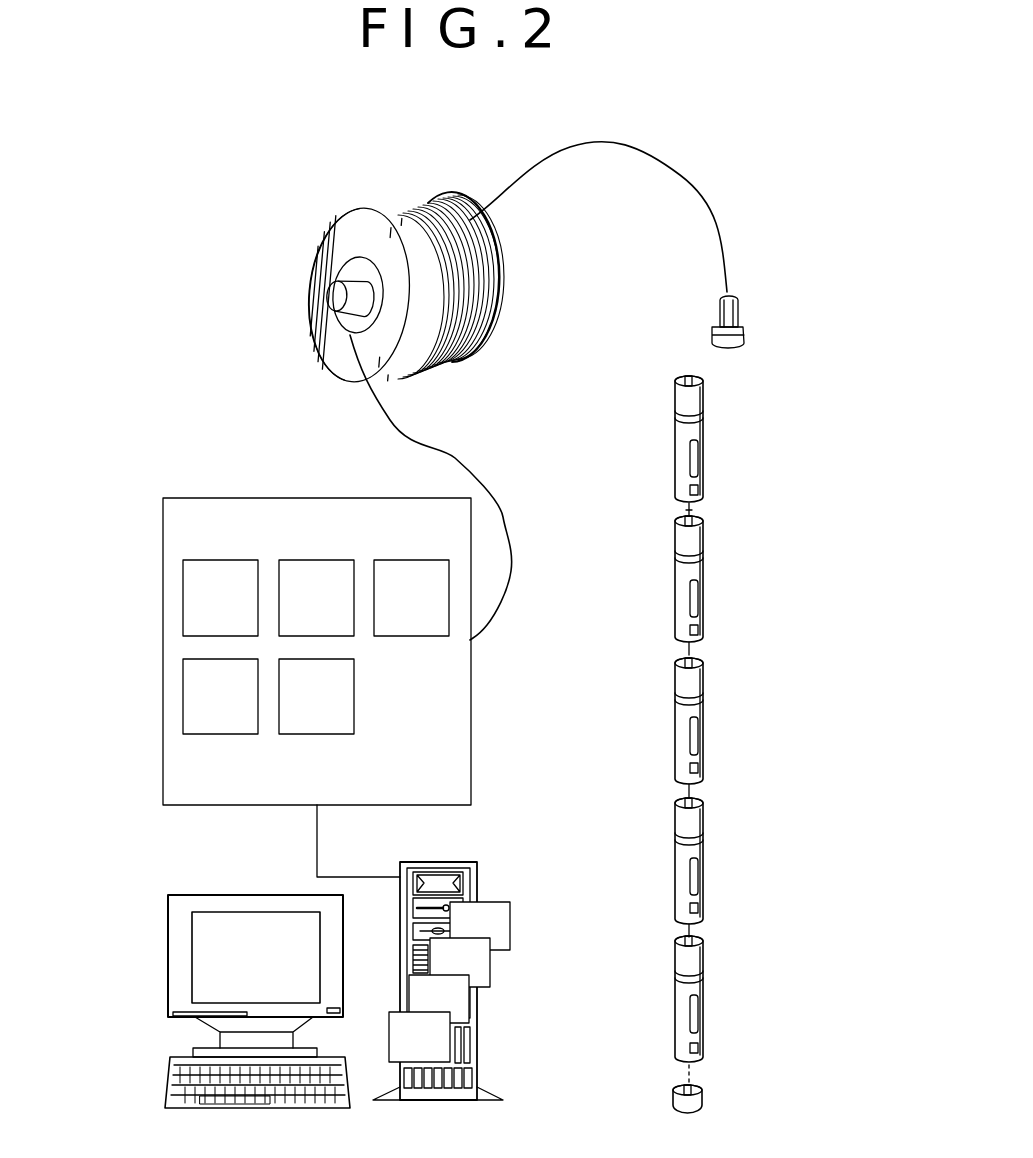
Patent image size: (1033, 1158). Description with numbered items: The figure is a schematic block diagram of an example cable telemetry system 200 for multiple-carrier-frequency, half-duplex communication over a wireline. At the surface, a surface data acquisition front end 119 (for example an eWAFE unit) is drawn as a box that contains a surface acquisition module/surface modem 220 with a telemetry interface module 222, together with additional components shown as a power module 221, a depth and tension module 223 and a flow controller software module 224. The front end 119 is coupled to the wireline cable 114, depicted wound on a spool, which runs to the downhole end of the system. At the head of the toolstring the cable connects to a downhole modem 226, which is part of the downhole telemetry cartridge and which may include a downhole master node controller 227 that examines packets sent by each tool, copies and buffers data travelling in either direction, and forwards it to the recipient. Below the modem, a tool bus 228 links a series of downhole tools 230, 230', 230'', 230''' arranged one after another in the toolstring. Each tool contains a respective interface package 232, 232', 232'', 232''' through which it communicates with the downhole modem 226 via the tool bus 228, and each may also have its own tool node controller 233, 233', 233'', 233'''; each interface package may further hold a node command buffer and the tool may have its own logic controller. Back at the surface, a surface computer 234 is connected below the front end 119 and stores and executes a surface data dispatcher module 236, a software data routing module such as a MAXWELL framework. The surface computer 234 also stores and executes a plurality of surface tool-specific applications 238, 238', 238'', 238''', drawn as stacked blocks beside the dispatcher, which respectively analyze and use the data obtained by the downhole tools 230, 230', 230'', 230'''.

The cable telemetry system 200 is at (210, 212).
The wireline cable 114 is at (500, 200).
The surface data acquisition front end 119 is at (222, 537).
The surface acquisition module/surface modem 220 is at (245, 612).
The power module 221 is at (341, 612).
The telemetry interface module 222 is at (436, 612).
The depth and tension module 223 is at (245, 710).
The flow controller software module 224 is at (341, 710).
The downhole modem 226 is at (703, 432).
The downhole master node controller 227 is at (703, 488).
The tool bus 228 is at (692, 513).
The downhole tool 230 is at (730, 585).
The interface package 232 is at (737, 589).
The tool node controller 233 is at (737, 613).
The downhole tool 230' is at (734, 727).
The interface package 232' is at (741, 725).
The tool node controller 233' is at (741, 751).
The downhole tool 230'' is at (738, 867).
The interface package 232'' is at (745, 864).
The tool node controller 233'' is at (745, 889).
The downhole tool 230''' is at (740, 1024).
The interface package 232''' is at (749, 1004).
The tool node controller 233''' is at (749, 1030).
The surface computer 234 is at (235, 893).
The surface data dispatcher module 236 is at (480, 874).
The surface tool-specific application 238 is at (419, 1037).
The surface tool-specific application 238' is at (439, 999).
The surface tool-specific application 238'' is at (460, 962).
The surface tool-specific application 238''' is at (480, 925).